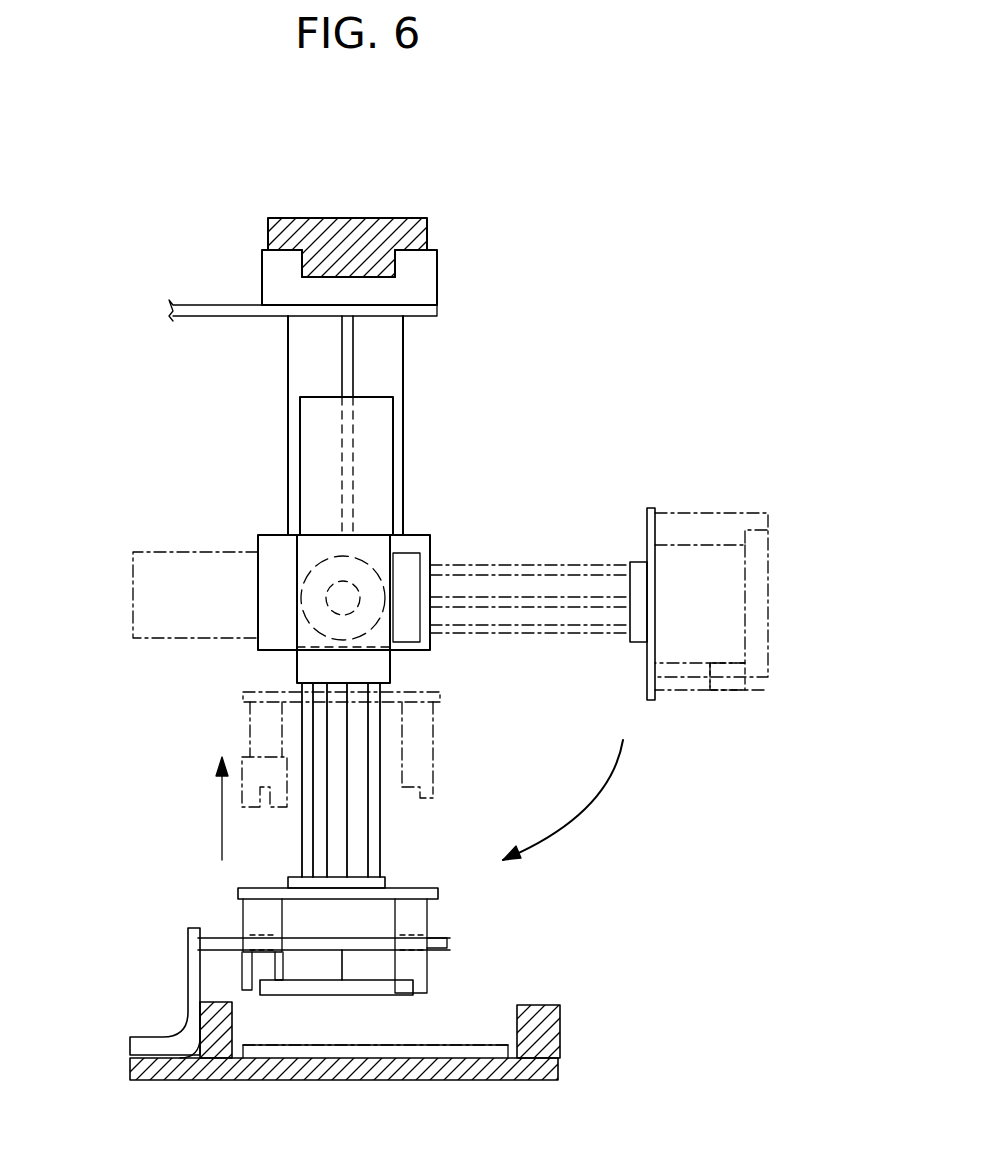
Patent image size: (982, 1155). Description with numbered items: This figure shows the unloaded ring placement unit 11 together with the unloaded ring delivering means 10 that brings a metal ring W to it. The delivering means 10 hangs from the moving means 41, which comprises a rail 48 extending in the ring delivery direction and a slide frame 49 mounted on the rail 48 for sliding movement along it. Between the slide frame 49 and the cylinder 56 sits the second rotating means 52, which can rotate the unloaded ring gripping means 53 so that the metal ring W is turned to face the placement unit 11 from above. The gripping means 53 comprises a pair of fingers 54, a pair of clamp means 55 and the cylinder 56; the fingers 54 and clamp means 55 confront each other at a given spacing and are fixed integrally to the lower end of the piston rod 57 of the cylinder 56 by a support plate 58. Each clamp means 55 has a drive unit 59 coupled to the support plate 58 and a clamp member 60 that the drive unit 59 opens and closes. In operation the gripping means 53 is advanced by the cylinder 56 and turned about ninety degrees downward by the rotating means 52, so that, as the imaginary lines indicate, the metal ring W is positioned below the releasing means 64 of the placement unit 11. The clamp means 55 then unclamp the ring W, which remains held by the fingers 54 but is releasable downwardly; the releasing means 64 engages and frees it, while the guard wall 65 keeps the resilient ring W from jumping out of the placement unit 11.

The moving means 41 is at (487, 204).
The rail 48 is at (370, 240).
The slide frame 49 is at (405, 505).
The unloaded ring delivering means 10 is at (462, 439).
The cylinder 56 is at (378, 420).
The second rotating means 52 is at (282, 599).
The unloaded ring gripping means 53 is at (608, 530).
The clamp means 55 is at (678, 708).
The fingers 54 is at (700, 520).
The metal ring W is at (778, 565).
The piston rod 57 is at (345, 745).
The support plate 58 is at (420, 885).
The drive units 59 is at (702, 695).
The clamp members 60 is at (748, 690).
The unloaded ring placement unit 11 is at (146, 988).
The guard wall 65 is at (207, 1020).
The releasing means 64 is at (343, 950).